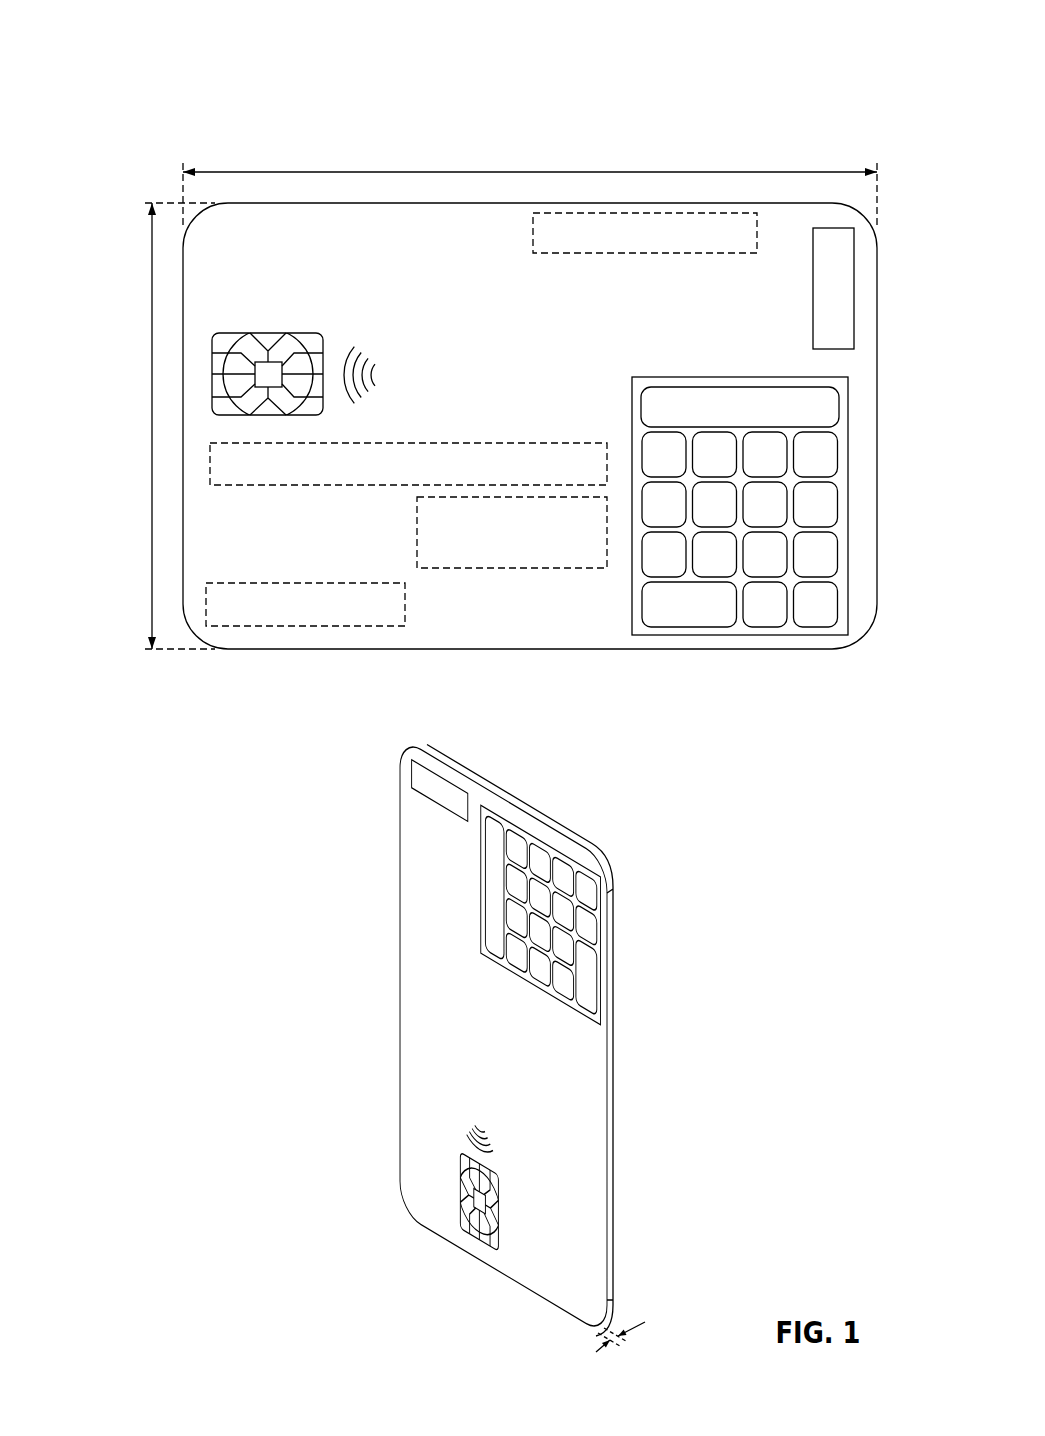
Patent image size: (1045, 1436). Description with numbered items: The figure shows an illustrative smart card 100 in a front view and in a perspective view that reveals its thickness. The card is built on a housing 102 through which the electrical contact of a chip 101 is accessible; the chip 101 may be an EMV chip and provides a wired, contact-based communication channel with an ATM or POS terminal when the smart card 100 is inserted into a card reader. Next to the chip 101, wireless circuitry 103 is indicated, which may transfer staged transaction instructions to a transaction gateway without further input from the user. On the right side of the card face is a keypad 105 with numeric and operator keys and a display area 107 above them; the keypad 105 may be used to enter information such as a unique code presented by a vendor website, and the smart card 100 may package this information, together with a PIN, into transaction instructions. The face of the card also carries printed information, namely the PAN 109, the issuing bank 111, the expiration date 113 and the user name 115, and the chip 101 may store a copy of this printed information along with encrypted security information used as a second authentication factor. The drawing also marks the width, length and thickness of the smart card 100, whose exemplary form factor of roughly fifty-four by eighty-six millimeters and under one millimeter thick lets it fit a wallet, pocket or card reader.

The smart card 100 is at (122, 52).
The chip 101 is at (308, 333).
The housing 102 is at (528, 650).
The wireless circuitry 103 is at (370, 372).
The keypad 105 is at (790, 542).
The calculator display 107 is at (839, 405).
The PAN 109 is at (500, 443).
The issuing bank 111 is at (533, 226).
The expiration date 113 is at (417, 532).
The user name 115 is at (302, 627).